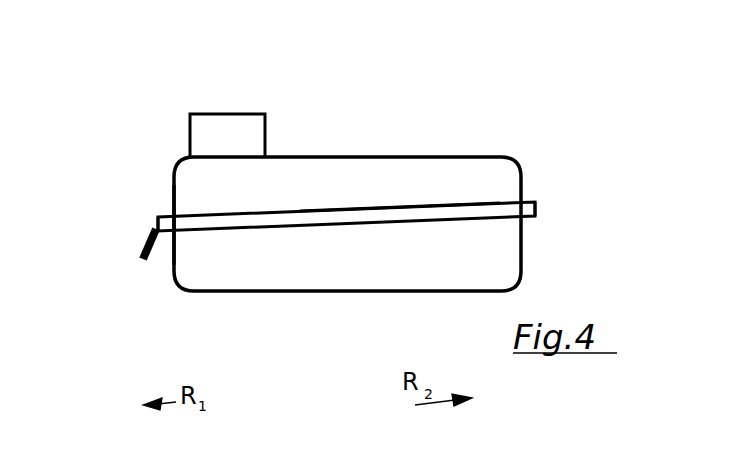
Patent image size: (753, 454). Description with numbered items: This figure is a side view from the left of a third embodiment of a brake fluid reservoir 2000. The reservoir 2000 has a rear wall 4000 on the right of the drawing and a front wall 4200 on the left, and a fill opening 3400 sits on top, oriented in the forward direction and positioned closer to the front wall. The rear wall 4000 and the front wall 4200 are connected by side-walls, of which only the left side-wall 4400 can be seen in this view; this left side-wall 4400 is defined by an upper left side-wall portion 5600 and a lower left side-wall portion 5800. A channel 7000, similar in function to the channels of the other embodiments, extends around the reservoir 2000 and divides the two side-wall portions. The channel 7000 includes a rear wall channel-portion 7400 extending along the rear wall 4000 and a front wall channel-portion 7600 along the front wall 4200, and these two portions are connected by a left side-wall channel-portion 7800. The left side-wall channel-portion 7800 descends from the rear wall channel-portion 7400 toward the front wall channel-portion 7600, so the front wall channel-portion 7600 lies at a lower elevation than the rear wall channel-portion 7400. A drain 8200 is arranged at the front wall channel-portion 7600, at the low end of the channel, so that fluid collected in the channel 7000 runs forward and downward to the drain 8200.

The brake fluid reservoir 2000 is at (360, 146).
The fill opening 3400 is at (248, 114).
The rear wall 4000 is at (530, 240).
The front wall 4200 is at (152, 218).
The left side-wall 4400 is at (425, 277).
The upper left side-wall portion 5600 is at (396, 202).
The lower left side-wall portion 5800 is at (393, 277).
The channel 7000 is at (273, 232).
The rear wall channel-portion 7400 is at (530, 203).
The front wall channel-portion 7600 is at (160, 217).
The left side-wall channel-portion 7800 is at (440, 218).
The drain 8200 is at (133, 258).